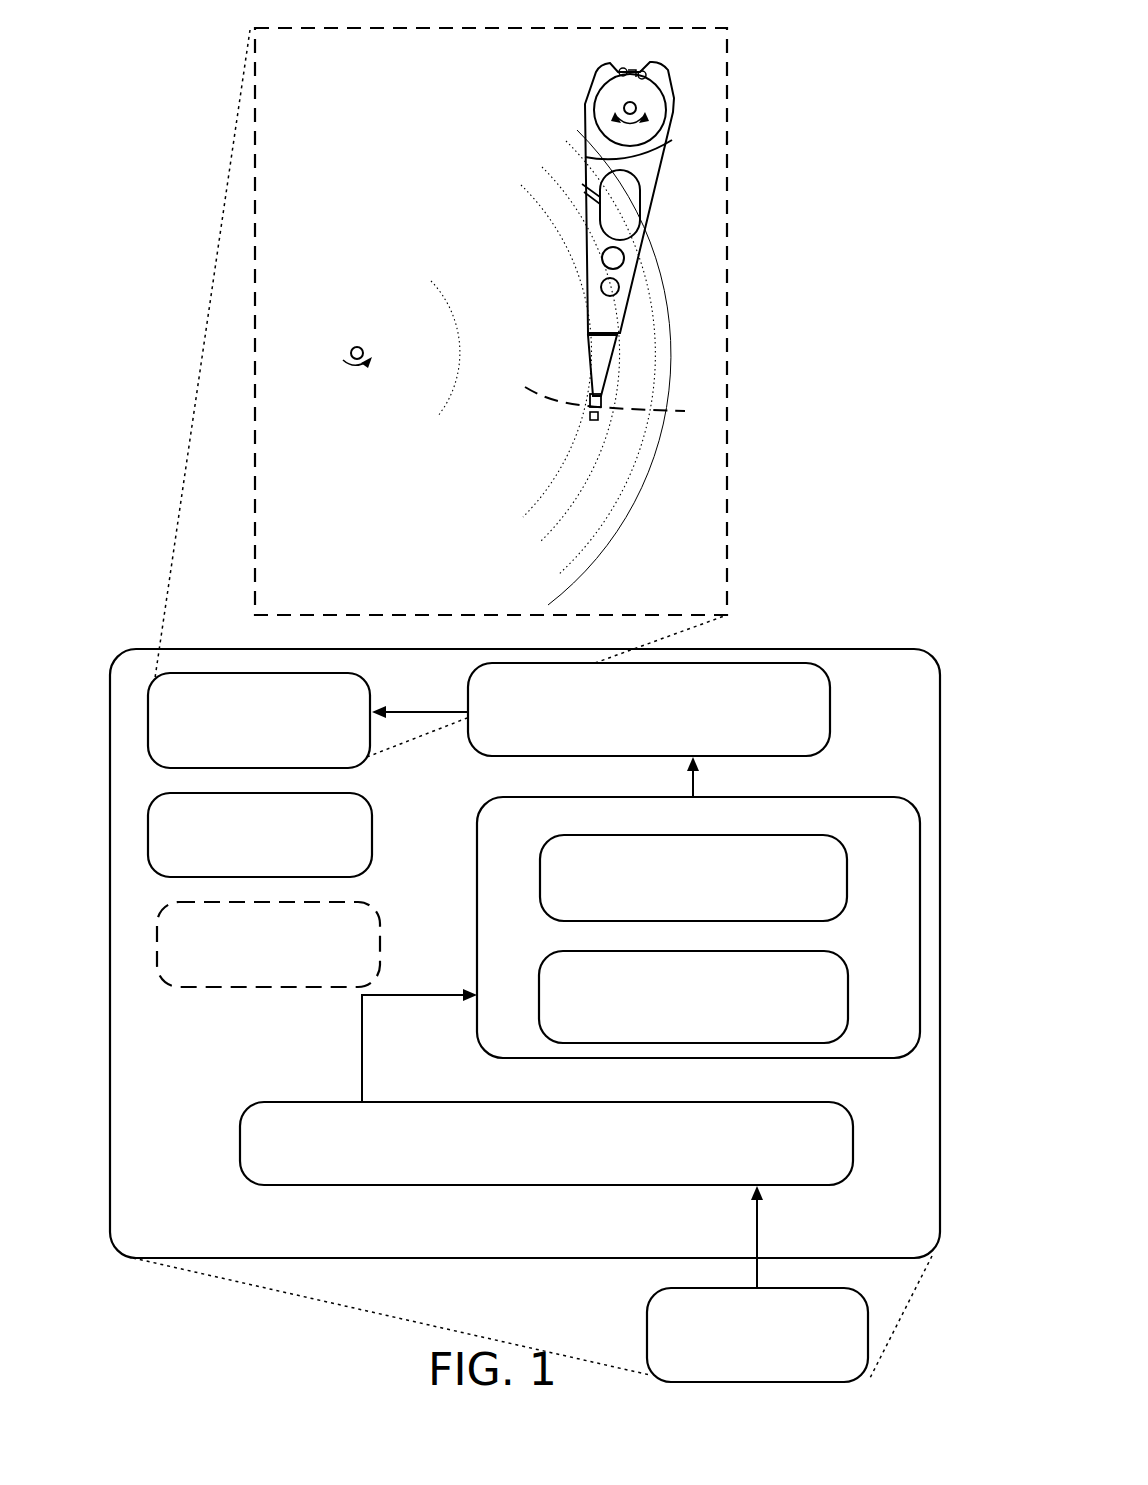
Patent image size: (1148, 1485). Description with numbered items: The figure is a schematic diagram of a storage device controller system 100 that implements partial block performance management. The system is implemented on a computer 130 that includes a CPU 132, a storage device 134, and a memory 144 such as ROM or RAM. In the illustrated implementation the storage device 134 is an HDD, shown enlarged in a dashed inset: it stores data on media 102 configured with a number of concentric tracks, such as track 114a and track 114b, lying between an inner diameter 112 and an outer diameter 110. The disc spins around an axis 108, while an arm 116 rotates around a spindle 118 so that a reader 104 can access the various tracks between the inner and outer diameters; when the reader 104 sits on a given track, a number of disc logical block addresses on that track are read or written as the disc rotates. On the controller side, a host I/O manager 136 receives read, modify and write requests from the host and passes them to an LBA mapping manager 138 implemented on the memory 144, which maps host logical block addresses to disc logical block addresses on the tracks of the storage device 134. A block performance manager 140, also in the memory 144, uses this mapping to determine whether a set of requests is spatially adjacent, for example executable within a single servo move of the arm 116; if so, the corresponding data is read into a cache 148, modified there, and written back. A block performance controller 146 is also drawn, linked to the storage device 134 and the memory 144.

The storage device controller system 100 is at (165, 62).
The media 102 is at (470, 268).
The reader 104 is at (588, 423).
The axis 108 is at (345, 354).
The outer diameter (OD) 110 is at (572, 562).
The inner diameter (ID) 112 is at (437, 415).
The track 114a is at (522, 538).
The track 114b is at (542, 565).
The arm 116 is at (588, 240).
The spindle 118 is at (622, 110).
The computer 130 is at (687, 1284).
The CPU 132 is at (260, 835).
The storage device 134 is at (259, 720).
The host I/O manager 136 is at (546, 1087).
The LBA mapping manager 138 is at (693, 997).
The block performance manager 140 is at (693, 878).
The memory 144 is at (698, 907).
The block performance controller 146 is at (601, 709).
The cache 148 is at (268, 944).